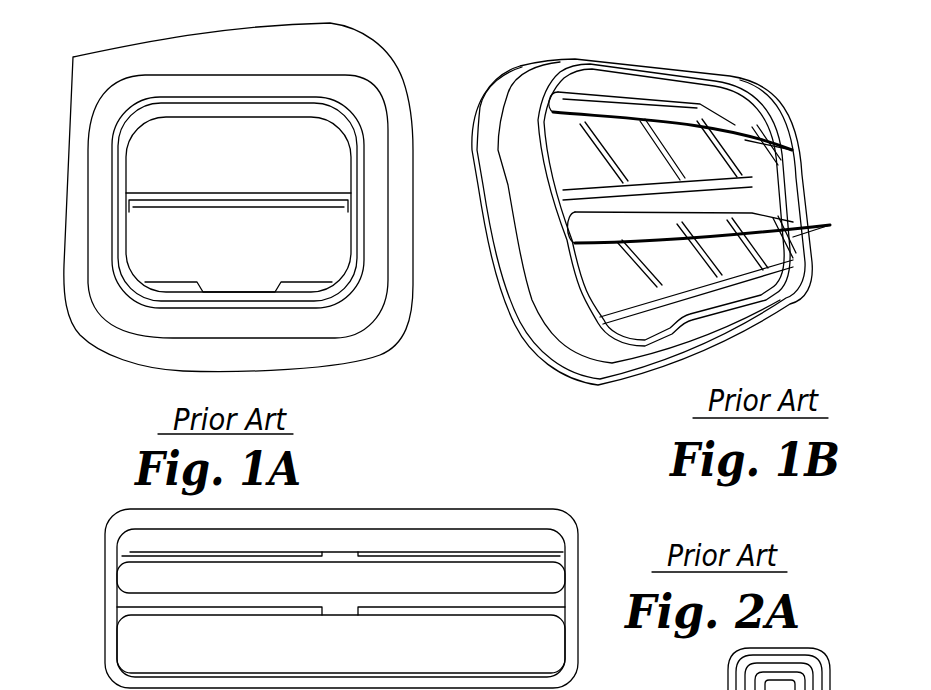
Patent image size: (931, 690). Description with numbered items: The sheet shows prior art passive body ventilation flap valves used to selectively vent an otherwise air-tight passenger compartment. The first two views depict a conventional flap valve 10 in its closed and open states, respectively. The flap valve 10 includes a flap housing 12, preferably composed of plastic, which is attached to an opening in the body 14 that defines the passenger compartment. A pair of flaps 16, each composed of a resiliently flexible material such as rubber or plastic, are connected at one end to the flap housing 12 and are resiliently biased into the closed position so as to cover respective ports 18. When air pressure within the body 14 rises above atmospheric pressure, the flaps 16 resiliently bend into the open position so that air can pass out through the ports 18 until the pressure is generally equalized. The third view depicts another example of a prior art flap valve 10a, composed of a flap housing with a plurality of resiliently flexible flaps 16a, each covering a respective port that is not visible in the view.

In FIG. 1A, the passive body ventilation flap valve 10 is at (131, 362).
In FIG. 1B, the passive body ventilation flap valve 10 is at (726, 64).
In FIG. 1A, the flap housing 12 is at (133, 293).
In FIG. 1B, the flap housing 12 is at (572, 333).
In FIG. 1A, the body 14 is at (128, 62).
In FIG. 1A, the flaps 16 is at (242, 166).
In FIG. 1B, the flaps 16 is at (745, 132).
In FIG. 1B, the ports 18 is at (723, 152).
In FIG. 2A, the flap valve 10a is at (422, 509).
In FIG. 2A, the flaps 16a is at (358, 586).